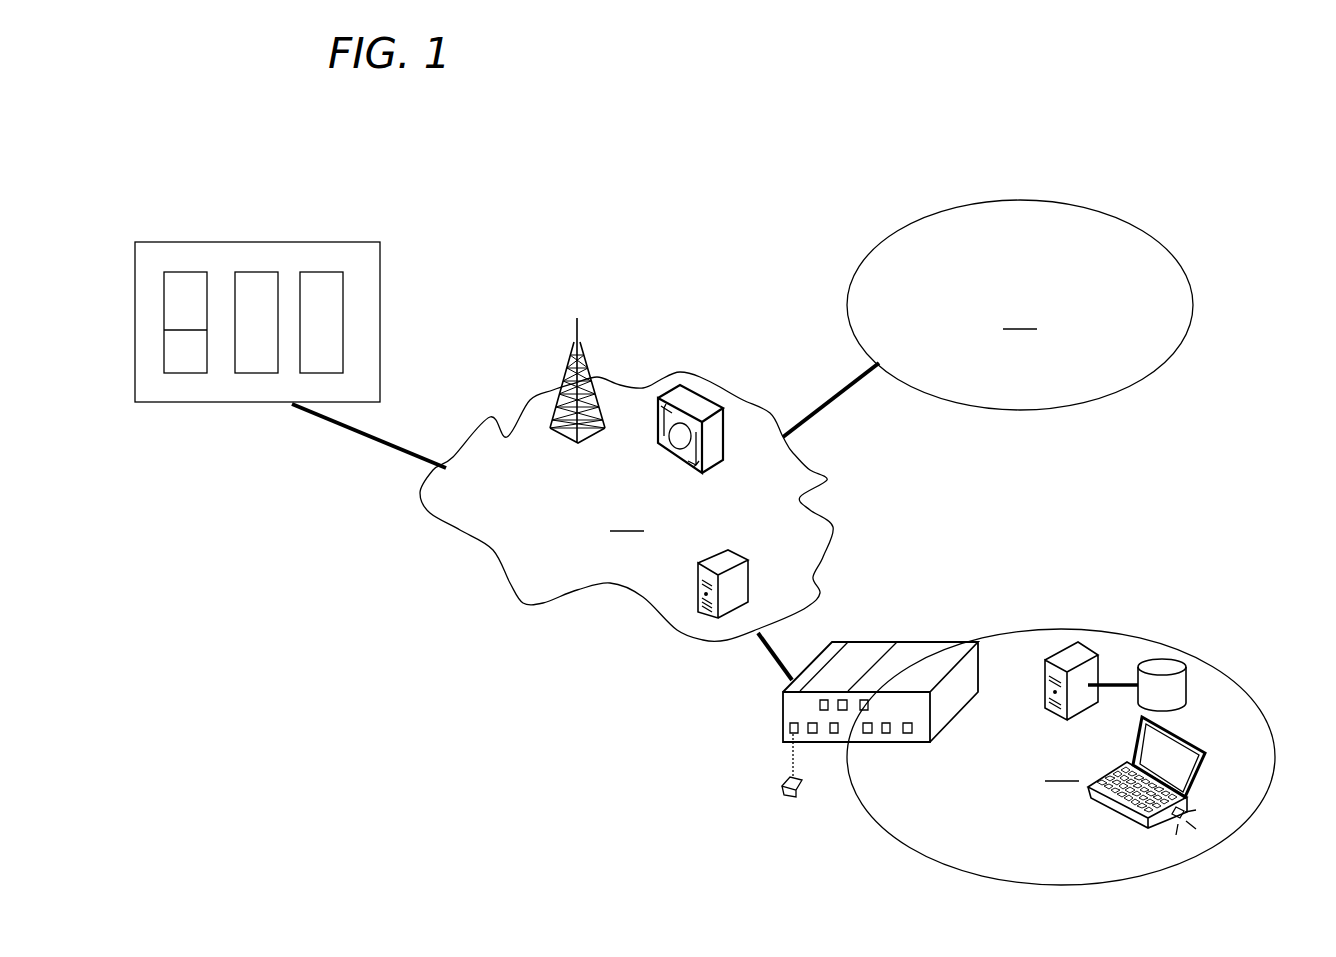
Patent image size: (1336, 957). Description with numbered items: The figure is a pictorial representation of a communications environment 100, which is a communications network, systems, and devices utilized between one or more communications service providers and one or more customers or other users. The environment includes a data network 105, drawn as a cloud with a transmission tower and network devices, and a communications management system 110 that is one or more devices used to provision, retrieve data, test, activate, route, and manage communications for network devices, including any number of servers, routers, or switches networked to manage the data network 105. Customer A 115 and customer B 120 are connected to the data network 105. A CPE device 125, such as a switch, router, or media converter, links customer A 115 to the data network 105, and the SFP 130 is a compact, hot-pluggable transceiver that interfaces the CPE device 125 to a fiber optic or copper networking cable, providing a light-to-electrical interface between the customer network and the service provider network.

The communications environment 100 is at (278, 176).
The data network 105 is at (626, 480).
The communications management system 110 is at (365, 257).
The customer A 115 is at (1061, 757).
The customer B 120 is at (1020, 305).
The CPE device 125 is at (900, 667).
The SFP 130 is at (782, 790).